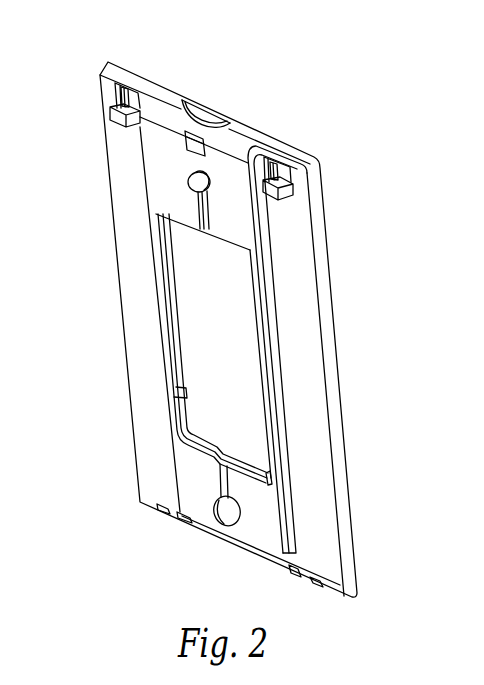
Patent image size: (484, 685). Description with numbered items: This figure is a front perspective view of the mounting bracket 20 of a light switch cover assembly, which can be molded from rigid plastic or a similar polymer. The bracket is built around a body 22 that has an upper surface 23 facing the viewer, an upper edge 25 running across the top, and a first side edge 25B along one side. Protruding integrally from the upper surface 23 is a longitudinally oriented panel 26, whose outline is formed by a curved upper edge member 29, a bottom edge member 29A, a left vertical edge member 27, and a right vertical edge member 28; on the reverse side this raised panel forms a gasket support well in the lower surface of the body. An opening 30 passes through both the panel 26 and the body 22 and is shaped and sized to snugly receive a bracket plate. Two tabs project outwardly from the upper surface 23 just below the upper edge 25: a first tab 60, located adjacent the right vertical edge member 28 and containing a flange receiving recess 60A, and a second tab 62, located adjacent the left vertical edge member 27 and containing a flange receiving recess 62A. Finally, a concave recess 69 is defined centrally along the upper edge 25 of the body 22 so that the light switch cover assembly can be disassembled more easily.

The mounting bracket 20 is at (253, 305).
The body 22 is at (134, 448).
The upper surface 23 is at (317, 407).
The upper edge 25 is at (152, 88).
The first side edge 25B is at (324, 308).
The longitudinally oriented panel 26 is at (268, 178).
The left vertical edge member 27 is at (268, 237).
The right vertical edge member 28 is at (145, 170).
The curved upper edge member 29 is at (162, 115).
The bottom edge member 29A is at (255, 553).
The opening 30 is at (207, 287).
The first tab 60 is at (113, 115).
The flange receiving recess 60A is at (137, 110).
The second tab 62 is at (289, 177).
The flange receiving recess 62A is at (293, 160).
The concave recess 69 is at (213, 118).